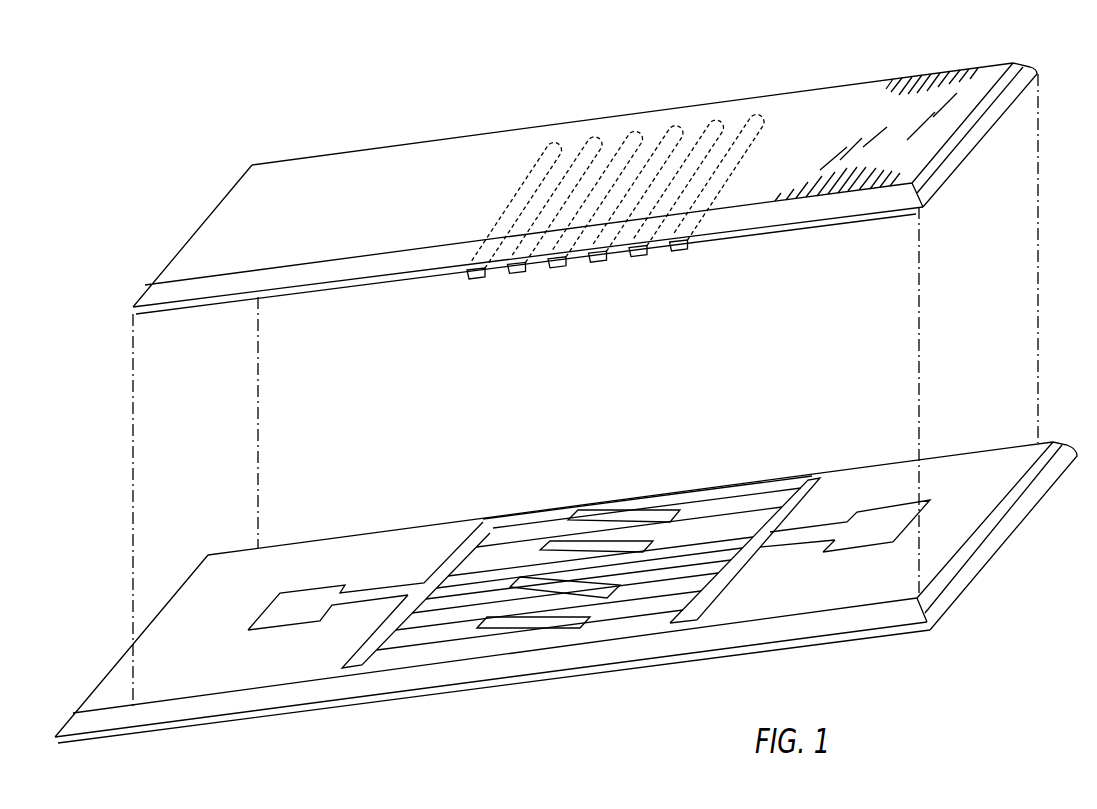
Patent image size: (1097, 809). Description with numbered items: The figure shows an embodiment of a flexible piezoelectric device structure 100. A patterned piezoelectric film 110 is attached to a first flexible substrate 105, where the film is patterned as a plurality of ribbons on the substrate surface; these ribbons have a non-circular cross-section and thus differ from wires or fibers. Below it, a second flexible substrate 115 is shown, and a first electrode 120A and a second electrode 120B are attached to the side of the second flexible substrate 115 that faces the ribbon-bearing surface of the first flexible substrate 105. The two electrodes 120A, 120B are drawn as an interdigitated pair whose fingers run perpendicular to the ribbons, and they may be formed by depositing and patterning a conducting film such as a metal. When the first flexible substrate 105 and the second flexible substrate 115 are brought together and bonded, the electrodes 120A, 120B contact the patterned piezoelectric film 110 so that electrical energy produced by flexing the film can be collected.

The device structure 100 is at (518, 80).
The first flexible substrate 105 is at (340, 192).
The patterned piezoelectric film 110 is at (555, 270).
The second flexible substrate 115 is at (177, 633).
The first electrode 120A is at (505, 568).
The second electrode 120B is at (787, 483).